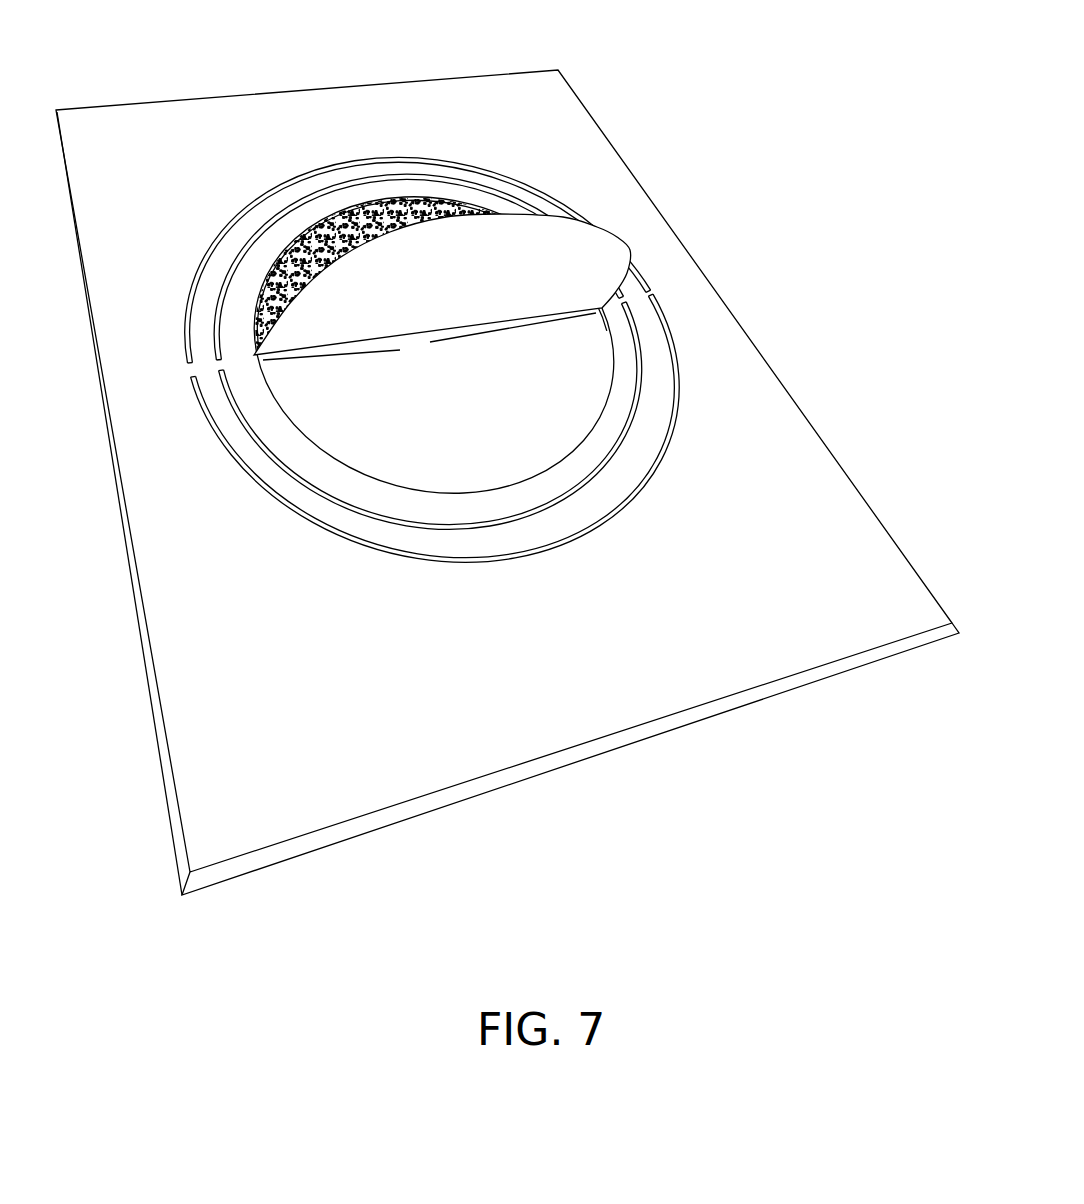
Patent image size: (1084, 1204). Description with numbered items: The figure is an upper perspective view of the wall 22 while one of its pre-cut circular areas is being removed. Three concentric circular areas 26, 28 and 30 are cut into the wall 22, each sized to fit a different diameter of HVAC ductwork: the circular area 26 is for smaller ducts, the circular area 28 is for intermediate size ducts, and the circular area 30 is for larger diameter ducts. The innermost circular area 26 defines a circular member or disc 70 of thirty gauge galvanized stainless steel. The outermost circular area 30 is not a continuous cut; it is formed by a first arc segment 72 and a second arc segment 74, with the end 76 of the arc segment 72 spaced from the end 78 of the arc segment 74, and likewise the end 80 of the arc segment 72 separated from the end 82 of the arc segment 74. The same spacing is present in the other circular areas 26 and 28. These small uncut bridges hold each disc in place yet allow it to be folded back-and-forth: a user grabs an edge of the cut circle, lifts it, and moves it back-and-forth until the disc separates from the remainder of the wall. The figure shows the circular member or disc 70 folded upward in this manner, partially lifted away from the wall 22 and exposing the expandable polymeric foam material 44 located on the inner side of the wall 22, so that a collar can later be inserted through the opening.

The wall 22 is at (612, 173).
The circular area 26 is at (617, 373).
The circular area 28 is at (642, 403).
The circular area 30 is at (452, 336).
The expandable polymeric foam material 44 is at (400, 195).
The circular member or disc 70 is at (612, 245).
The first arc segment 72 is at (416, 336).
The second arc segment 74 is at (290, 180).
The end of arc segment 76 is at (195, 390).
The end of arc segment 78 is at (190, 370).
The end of arc segment 80 is at (657, 298).
The end of arc segment 82 is at (644, 282).